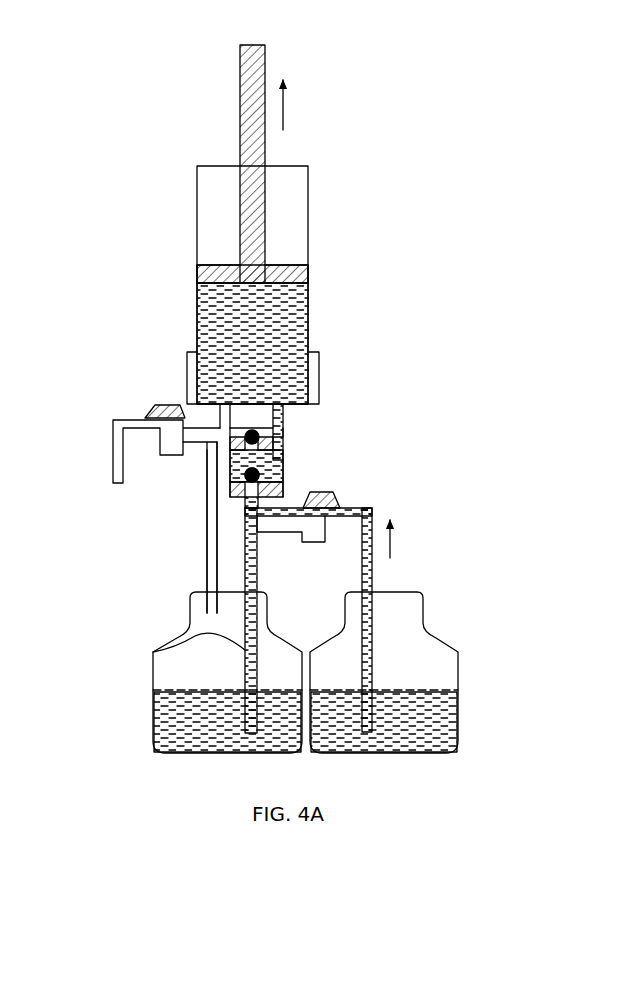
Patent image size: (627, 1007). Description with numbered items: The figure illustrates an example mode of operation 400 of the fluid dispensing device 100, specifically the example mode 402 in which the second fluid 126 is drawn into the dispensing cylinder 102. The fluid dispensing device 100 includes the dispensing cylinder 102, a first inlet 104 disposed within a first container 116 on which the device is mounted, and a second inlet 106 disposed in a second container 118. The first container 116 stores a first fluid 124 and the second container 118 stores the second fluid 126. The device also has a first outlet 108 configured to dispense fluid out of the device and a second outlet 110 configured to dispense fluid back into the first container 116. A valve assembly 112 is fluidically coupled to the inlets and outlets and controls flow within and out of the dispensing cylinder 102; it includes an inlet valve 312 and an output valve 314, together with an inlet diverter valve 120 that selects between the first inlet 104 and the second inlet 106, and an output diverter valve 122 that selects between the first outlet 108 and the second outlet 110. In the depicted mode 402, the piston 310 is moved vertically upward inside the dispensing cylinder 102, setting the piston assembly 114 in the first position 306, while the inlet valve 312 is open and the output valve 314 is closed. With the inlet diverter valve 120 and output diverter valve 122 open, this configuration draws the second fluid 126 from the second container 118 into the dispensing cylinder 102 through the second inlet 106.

The mode of operation 400 is at (541, 55).
The fluid dispensing device 100 is at (472, 180).
The piston assembly 114 is at (320, 166).
The piston 310 is at (265, 245).
The example mode 402 is at (360, 90).
The first position 306 is at (180, 268).
The dispensing cylinder 102 is at (310, 310).
The output valve 314 is at (290, 422).
The valve assembly 112 is at (297, 478).
The inlet valve 312 is at (246, 472).
The output diverter valve 122 is at (165, 403).
The first outlet 108 is at (112, 445).
The second outlet 110 is at (207, 535).
The inlet diverter valve 120 is at (335, 500).
The second inlet 106 is at (372, 515).
The first inlet 104 is at (153, 656).
The first fluid 124 is at (183, 707).
The first container 116 is at (155, 728).
The second container 118 is at (458, 668).
The second fluid 126 is at (443, 712).